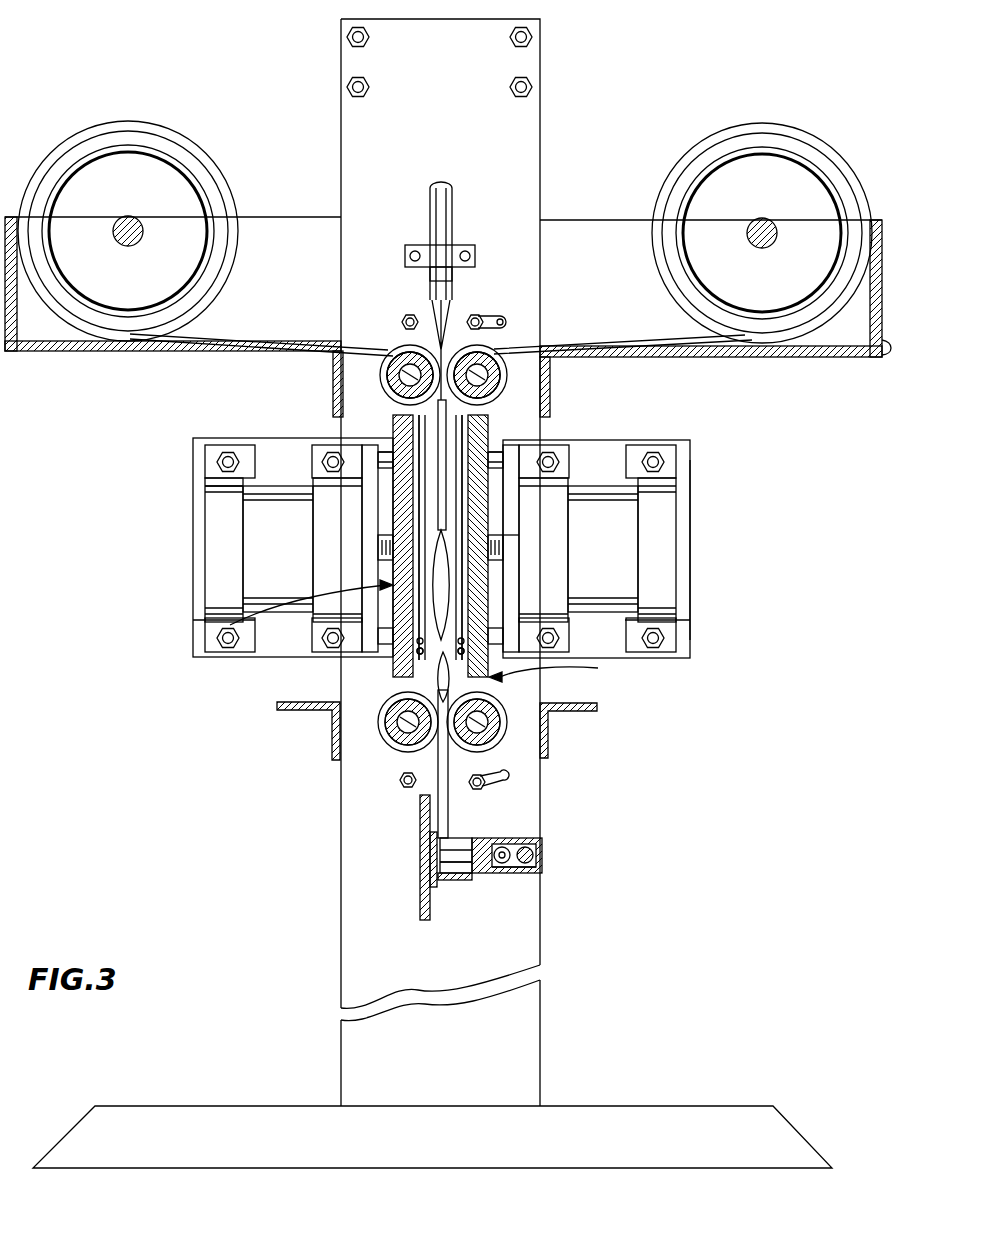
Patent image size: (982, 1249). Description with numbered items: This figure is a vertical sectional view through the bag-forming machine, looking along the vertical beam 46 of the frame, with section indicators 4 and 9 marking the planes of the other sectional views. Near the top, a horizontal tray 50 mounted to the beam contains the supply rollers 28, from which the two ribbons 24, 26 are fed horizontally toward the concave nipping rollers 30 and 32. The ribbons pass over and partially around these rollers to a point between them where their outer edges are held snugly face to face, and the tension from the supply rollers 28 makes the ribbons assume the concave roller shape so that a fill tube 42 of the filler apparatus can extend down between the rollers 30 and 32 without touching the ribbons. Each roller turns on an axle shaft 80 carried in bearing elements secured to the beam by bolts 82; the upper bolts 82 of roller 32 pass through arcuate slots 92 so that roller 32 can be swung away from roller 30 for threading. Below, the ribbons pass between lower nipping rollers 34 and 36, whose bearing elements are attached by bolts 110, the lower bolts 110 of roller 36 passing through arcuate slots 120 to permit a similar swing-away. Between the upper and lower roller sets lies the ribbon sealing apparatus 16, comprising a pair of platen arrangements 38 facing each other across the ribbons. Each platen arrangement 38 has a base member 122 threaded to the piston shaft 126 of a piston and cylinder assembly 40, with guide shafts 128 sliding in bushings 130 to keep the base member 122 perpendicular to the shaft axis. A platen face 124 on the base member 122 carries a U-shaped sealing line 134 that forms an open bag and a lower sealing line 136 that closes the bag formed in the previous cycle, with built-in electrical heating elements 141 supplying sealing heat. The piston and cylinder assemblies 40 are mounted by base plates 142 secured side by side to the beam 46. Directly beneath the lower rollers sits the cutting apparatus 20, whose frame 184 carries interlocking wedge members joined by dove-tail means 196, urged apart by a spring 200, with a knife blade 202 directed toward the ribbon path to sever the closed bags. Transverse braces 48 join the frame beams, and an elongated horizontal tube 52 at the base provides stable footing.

The section line 4- 4 is at (280, 103).
The section line 9- 9 is at (285, 858).
The ribbon sealing apparatus 16 is at (690, 557).
The cutting apparatus 20 is at (542, 858).
The ribbon 24 is at (192, 340).
The ribbon 26 is at (696, 340).
The supply rollers 28 is at (786, 124).
The concave nipping roller 30 is at (382, 380).
The concave nipping roller 32 is at (505, 380).
The lower nipping roller 34 is at (388, 740).
The lower nipping roller 36 is at (505, 732).
The platen arrangement 38 is at (200, 623).
The piston and cylinder assembly 40 is at (222, 502).
The fill tube 42 is at (430, 303).
The vertical beam 46 is at (536, 968).
The transverse braces 48 is at (302, 351).
The horizontal tray 50 is at (882, 352).
The elongated horizontal tubes 52 is at (648, 1106).
The axle shafts 80 is at (396, 362).
The bolts 82 is at (402, 318).
The arcuate slots 92 is at (506, 318).
The bolts 110 is at (404, 787).
The arcuate slots 120 is at (506, 777).
The base member 122 is at (498, 572).
The platen face 124 is at (456, 682).
The piston shaft 126 is at (262, 490).
The guide shafts 128 is at (377, 452).
The bushings 130 is at (390, 450).
The sealing line 134 is at (520, 586).
The sealing line 136 is at (565, 669).
The electrical heating elements 141 is at (466, 650).
The base plates 142 is at (690, 461).
The frame 184 is at (527, 846).
The dove-tail means 196 is at (505, 866).
The spring 200 is at (505, 840).
The knife blade 202 is at (460, 880).